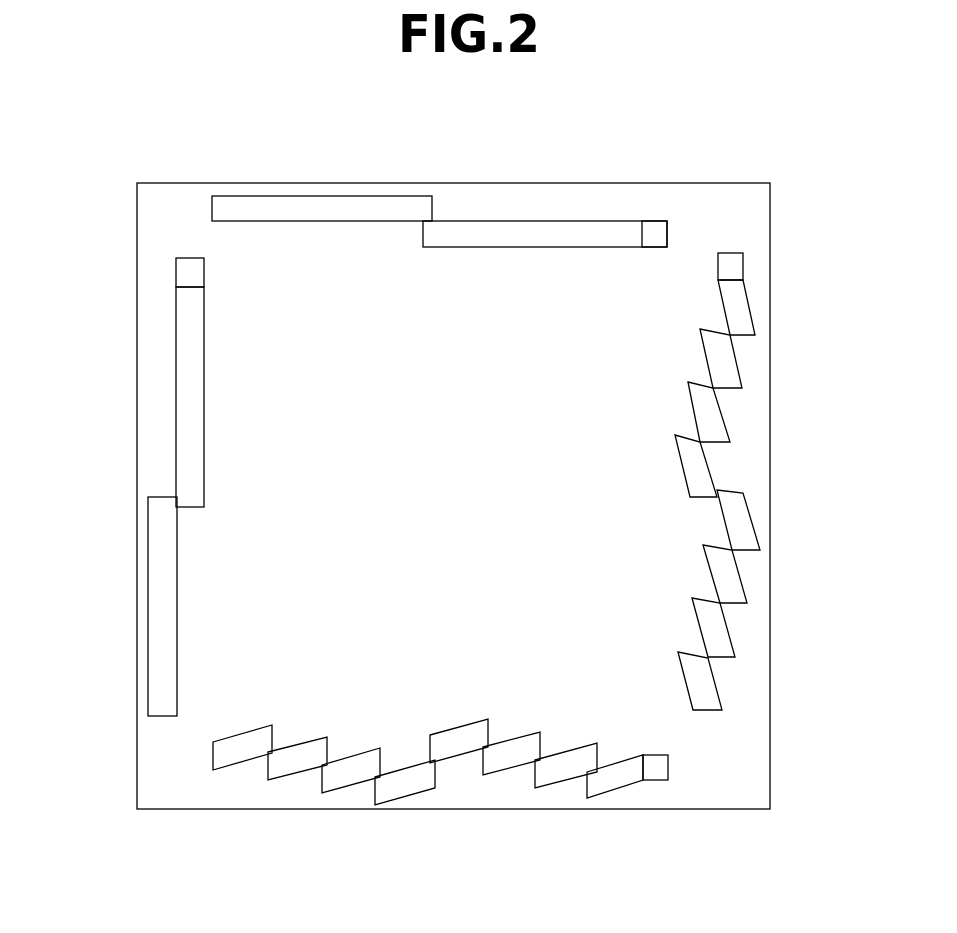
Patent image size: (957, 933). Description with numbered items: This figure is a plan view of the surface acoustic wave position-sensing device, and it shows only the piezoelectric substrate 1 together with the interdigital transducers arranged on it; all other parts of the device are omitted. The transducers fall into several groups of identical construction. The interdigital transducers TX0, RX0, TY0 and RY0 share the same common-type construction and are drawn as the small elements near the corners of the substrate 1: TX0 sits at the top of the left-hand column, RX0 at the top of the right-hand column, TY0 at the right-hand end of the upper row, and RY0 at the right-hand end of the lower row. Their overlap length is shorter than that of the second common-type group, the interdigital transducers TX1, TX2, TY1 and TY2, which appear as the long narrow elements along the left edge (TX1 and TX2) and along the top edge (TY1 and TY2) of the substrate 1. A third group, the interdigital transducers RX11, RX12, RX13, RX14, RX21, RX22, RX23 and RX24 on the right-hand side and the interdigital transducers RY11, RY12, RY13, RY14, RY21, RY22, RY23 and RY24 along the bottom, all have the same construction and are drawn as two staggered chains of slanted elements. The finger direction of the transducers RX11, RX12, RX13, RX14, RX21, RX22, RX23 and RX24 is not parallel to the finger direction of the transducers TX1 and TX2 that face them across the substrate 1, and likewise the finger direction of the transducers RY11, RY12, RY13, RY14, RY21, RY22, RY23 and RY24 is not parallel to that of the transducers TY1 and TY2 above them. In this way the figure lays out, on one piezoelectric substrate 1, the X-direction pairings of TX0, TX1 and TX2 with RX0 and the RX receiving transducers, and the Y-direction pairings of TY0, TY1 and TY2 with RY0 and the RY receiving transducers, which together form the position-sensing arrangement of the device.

The piezoelectric substrate 1 is at (738, 752).
The interdigital transducer TX0 is at (188, 277).
The interdigital transducer TX1 is at (188, 405).
The interdigital transducer TX2 is at (162, 628).
The interdigital transducer TY0 is at (657, 230).
The interdigital transducer TY1 is at (518, 232).
The interdigital transducer TY2 is at (286, 208).
The interdigital transducer RX0 is at (733, 268).
The interdigital transducer RX11 is at (740, 313).
The interdigital transducer RX12 is at (716, 365).
The interdigital transducer RX13 is at (703, 418).
The interdigital transducer RX14 is at (690, 472).
The interdigital transducer RX21 is at (735, 527).
The interdigital transducer RX22 is at (722, 581).
The interdigital transducer RX23 is at (710, 635).
The interdigital transducer RX24 is at (697, 688).
The interdigital transducer RY0 is at (657, 770).
The interdigital transducer RY11 is at (616, 780).
The interdigital transducer RY12 is at (557, 772).
The interdigital transducer RY13 is at (503, 762).
The interdigital transducer RY14 is at (450, 750).
The interdigital transducer RY21 is at (400, 790).
The interdigital transducer RY22 is at (337, 780).
The interdigital transducer RY23 is at (288, 768).
The interdigital transducer RY24 is at (230, 758).